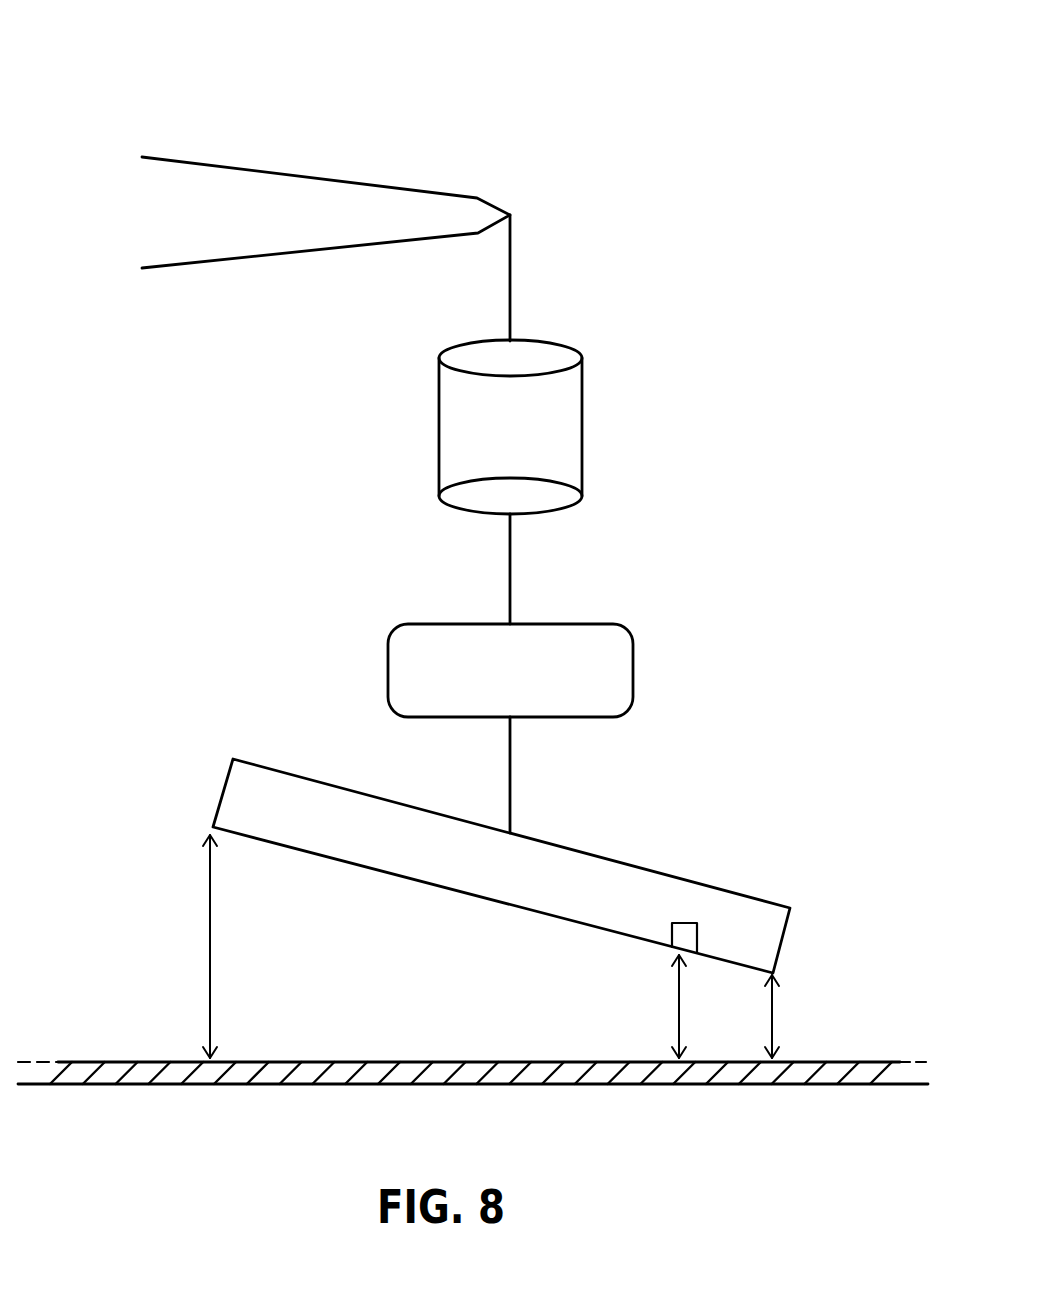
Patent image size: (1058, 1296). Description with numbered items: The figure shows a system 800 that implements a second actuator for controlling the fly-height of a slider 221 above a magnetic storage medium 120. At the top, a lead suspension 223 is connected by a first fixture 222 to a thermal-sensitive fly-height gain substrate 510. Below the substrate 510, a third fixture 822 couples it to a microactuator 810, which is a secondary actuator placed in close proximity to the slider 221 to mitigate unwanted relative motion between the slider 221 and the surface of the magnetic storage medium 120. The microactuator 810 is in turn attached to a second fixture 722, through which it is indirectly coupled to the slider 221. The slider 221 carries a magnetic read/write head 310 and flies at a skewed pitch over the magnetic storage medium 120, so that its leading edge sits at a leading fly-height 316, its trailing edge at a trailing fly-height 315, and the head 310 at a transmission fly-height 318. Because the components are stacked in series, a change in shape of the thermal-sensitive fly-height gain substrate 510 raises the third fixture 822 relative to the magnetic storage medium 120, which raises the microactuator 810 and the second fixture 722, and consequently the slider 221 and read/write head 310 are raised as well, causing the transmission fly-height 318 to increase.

The system 800 is at (419, 32).
The lead suspension 223 is at (263, 170).
The first fixture 222 is at (512, 270).
The thermal-sensitive fly-height gain substrate 510 is at (583, 408).
The third fixture 822 is at (512, 572).
The microactuator 810 is at (634, 666).
The second fixture 722 is at (512, 780).
The slider 221 is at (790, 928).
The magnetic read/write head 310 is at (678, 937).
The leading fly-height 316 is at (210, 940).
The transmission fly-height 318 is at (678, 1018).
The trailing fly-height 315 is at (773, 1013).
The magnetic storage medium 120 is at (827, 1086).